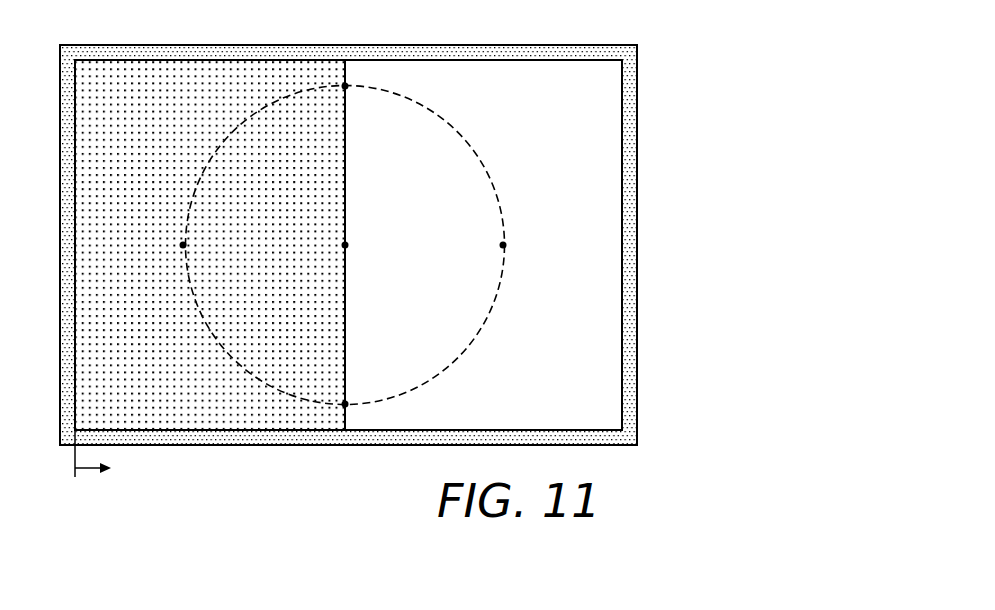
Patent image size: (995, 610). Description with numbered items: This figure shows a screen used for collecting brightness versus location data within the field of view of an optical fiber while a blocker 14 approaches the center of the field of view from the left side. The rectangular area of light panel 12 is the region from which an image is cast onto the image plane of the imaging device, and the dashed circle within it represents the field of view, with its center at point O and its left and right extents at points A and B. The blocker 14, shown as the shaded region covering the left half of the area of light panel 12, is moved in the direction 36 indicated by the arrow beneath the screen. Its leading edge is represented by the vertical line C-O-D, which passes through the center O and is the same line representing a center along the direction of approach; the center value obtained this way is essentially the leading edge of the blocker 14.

The area of light panel 12 is at (385, 160).
The blocker 14 is at (130, 100).
The direction in which blocker is moved 36 is at (82, 470).
The center point O is at (345, 245).
The point A is at (183, 245).
The point B is at (503, 245).
The point C is at (345, 86).
The point D is at (345, 404).